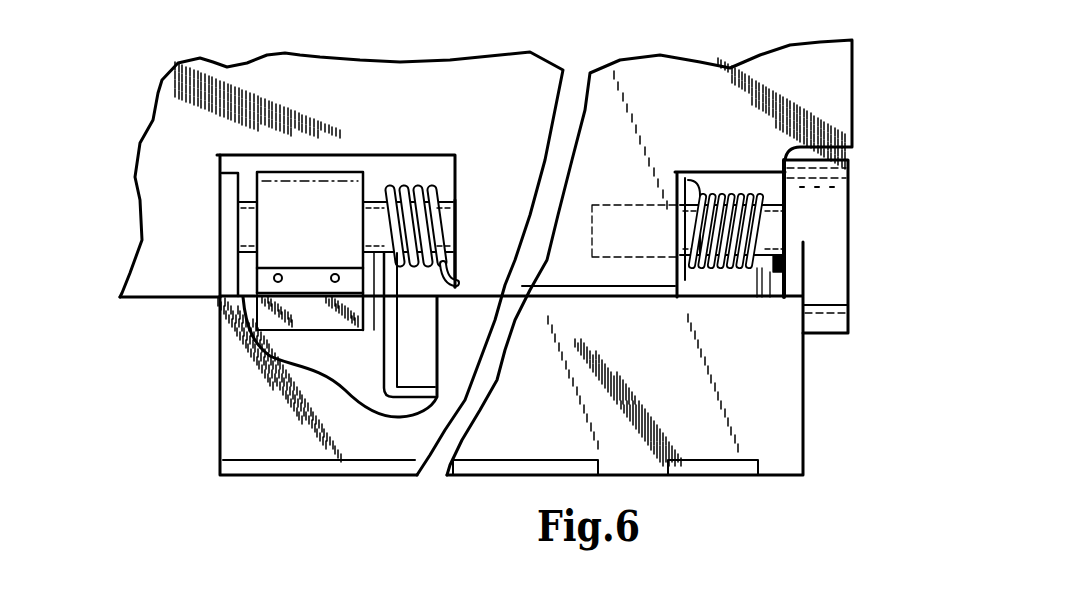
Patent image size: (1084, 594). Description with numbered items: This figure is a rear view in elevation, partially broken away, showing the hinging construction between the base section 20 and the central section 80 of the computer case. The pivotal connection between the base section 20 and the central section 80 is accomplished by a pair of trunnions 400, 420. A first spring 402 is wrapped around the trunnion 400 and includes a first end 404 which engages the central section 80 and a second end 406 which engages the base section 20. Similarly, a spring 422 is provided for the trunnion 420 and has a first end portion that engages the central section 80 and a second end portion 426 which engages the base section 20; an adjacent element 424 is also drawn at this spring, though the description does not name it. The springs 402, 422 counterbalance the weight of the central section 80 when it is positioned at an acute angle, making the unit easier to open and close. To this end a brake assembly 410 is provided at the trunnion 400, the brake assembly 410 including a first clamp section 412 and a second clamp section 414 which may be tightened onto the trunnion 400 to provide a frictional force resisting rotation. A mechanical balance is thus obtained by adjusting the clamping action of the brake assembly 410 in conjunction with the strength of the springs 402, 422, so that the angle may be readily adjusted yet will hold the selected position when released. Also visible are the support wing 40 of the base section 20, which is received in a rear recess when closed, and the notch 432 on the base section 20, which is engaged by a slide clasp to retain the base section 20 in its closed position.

The central section 80 is at (337, 73).
The base section 20 is at (778, 387).
The support wing 40 is at (325, 470).
The notch 432 is at (705, 473).
The brake assembly 410 is at (258, 175).
The first clamp section 412 is at (272, 257).
The second clamp section 414 is at (277, 315).
The trunnion 400 is at (373, 195).
The first spring 402 is at (398, 183).
The first end 404 is at (456, 250).
The second end 406 is at (387, 347).
The spring retainer 424 is at (688, 190).
The spring 422 is at (707, 195).
The trunnion 420 is at (787, 226).
The second end portion 426 is at (760, 290).